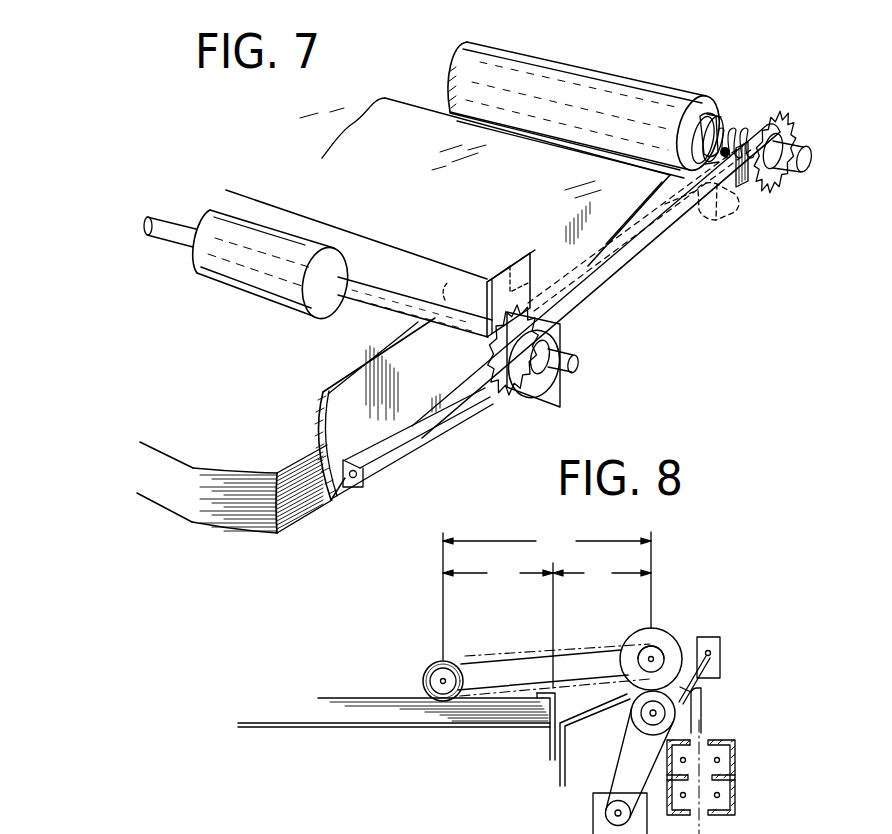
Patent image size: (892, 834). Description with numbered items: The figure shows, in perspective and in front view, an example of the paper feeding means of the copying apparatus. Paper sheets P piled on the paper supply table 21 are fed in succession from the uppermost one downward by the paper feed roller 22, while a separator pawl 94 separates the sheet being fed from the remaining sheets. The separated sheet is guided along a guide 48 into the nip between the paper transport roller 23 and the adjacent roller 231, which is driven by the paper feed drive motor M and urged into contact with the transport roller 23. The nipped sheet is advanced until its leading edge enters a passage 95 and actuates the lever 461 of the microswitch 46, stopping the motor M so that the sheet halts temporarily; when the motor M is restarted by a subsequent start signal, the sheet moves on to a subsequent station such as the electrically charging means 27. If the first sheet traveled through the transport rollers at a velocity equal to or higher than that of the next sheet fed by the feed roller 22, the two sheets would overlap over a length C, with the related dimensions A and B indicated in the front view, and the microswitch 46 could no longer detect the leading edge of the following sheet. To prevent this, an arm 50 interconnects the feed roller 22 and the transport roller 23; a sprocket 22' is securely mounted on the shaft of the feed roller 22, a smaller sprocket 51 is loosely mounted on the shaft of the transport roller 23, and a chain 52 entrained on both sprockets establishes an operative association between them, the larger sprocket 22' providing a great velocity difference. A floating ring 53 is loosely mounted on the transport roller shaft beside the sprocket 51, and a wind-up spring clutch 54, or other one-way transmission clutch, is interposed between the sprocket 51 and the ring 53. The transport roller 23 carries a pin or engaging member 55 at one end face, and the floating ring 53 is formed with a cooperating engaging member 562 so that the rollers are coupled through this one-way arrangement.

In FIG. 7, the paper supply table 21 is at (338, 480).
In FIG. 8, the paper supply table 21 is at (372, 729).
In FIG. 7, the paper feed roller 22 is at (318, 251).
In FIG. 8, the paper feed roller 22 is at (418, 674).
In FIG. 7, the sprocket 22' is at (534, 371).
In FIG. 8, the sprocket 22' is at (435, 662).
In FIG. 7, the paper transport roller 23 is at (585, 82).
In FIG. 8, the paper transport roller 23 is at (662, 633).
In FIG. 7, the roller 231 is at (797, 157).
In FIG. 8, the roller 231 is at (638, 714).
In FIG. 8, the electrically charging means 27 is at (733, 747).
In FIG. 8, the microswitch 46 is at (721, 643).
In FIG. 8, the lever 461 is at (685, 681).
In FIG. 7, the guide 48 is at (393, 117).
In FIG. 8, the guide 48 is at (595, 740).
In FIG. 7, the arm 50 is at (660, 258).
In FIG. 8, the arm 50 is at (573, 660).
In FIG. 7, the sprocket 51 is at (784, 133).
In FIG. 8, the sprocket 51 is at (664, 652).
In FIG. 7, the chain 52 is at (588, 258).
In FIG. 8, the chain 52 is at (487, 655).
In FIG. 7, the floating ring 53 is at (723, 126).
In FIG. 7, the wind-up spring clutch 54 is at (727, 136).
In FIG. 7, the engaging member 55 is at (690, 144).
In FIG. 7, the clutch member 562 is at (690, 122).
In FIG. 7, the separator pawl 94 is at (520, 275).
In FIG. 8, the separator pawl 94 is at (543, 703).
In FIG. 8, the passage 95 is at (702, 711).
In FIG. 7, the paper sheet P is at (297, 493).
In FIG. 8, the paper sheet P is at (473, 708).
In FIG. 8, the paper feed drive motor M is at (602, 823).
In FIG. 8, the distance A is at (547, 593).
In FIG. 8, the distance B is at (602, 574).
In FIG. 8, the overlapping length C is at (498, 624).